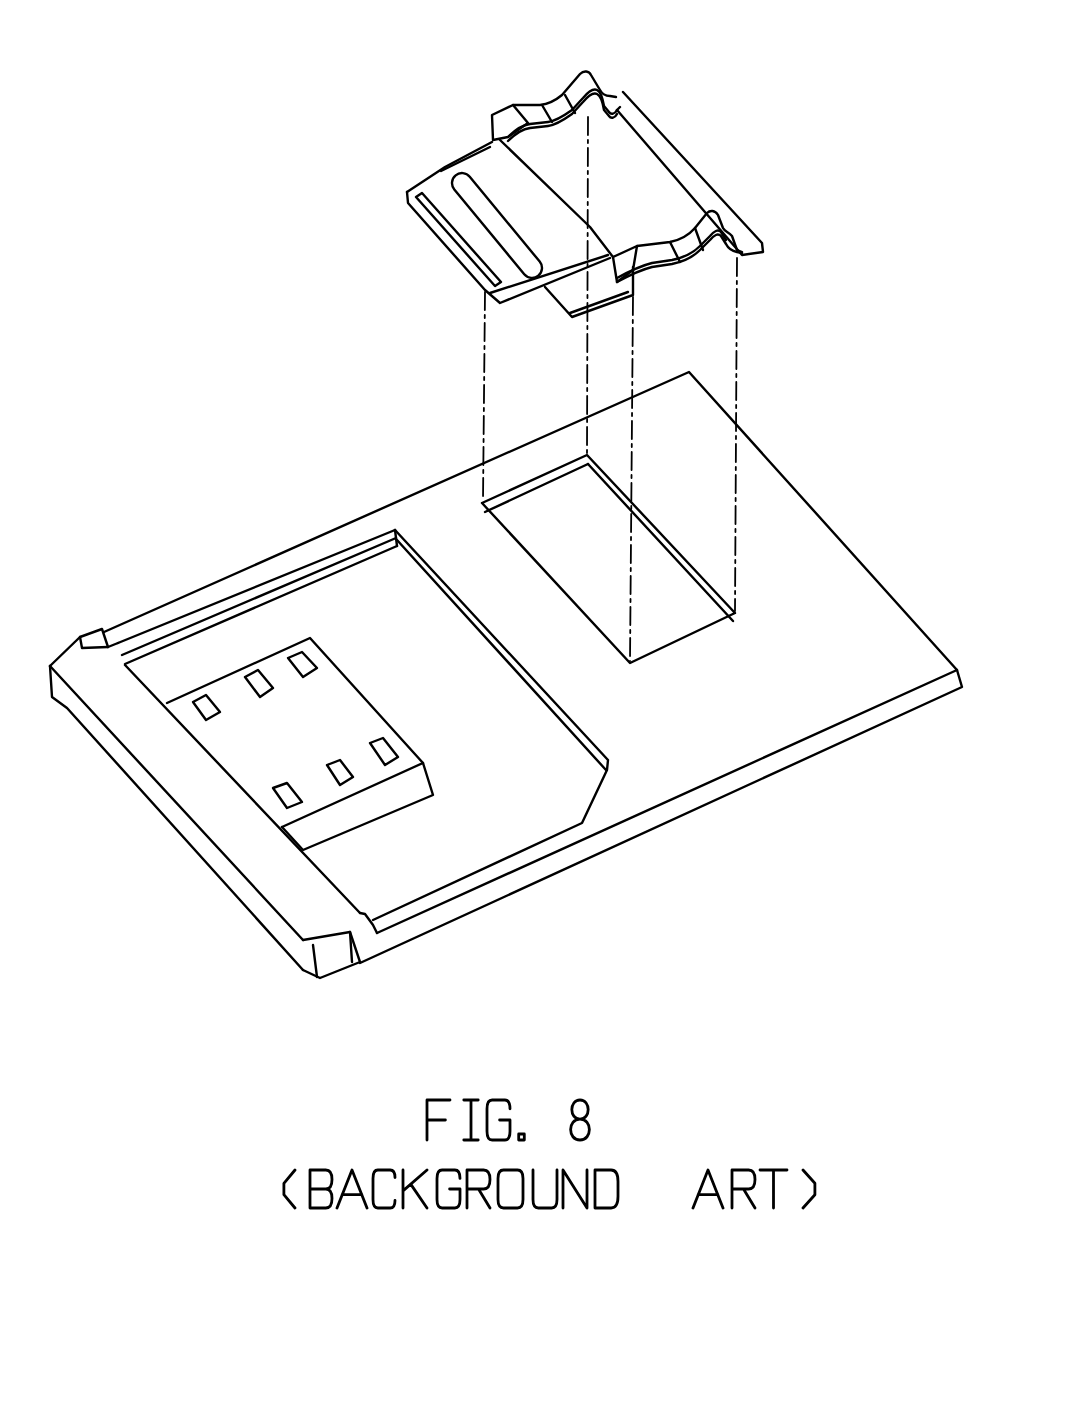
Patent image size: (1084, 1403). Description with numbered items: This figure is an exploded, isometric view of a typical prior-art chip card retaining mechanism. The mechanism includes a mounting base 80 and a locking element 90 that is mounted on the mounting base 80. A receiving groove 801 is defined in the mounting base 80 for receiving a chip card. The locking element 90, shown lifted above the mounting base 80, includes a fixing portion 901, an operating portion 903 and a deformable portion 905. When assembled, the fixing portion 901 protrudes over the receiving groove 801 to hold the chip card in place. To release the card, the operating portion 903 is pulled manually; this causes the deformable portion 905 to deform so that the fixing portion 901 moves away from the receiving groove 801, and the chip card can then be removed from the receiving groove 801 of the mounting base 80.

The mounting base 80 is at (506, 681).
The receiving groove 801 is at (542, 979).
The locking element 90 is at (546, 353).
The fixing portion 901 is at (470, 222).
The operating portion 903 is at (492, 222).
The deformable portion 905 is at (478, 53).